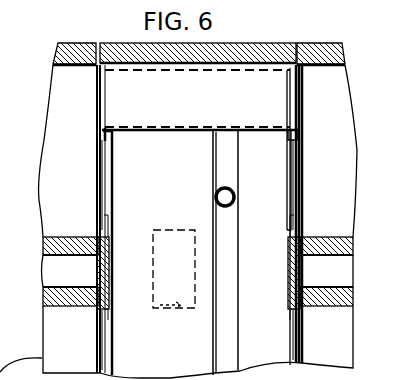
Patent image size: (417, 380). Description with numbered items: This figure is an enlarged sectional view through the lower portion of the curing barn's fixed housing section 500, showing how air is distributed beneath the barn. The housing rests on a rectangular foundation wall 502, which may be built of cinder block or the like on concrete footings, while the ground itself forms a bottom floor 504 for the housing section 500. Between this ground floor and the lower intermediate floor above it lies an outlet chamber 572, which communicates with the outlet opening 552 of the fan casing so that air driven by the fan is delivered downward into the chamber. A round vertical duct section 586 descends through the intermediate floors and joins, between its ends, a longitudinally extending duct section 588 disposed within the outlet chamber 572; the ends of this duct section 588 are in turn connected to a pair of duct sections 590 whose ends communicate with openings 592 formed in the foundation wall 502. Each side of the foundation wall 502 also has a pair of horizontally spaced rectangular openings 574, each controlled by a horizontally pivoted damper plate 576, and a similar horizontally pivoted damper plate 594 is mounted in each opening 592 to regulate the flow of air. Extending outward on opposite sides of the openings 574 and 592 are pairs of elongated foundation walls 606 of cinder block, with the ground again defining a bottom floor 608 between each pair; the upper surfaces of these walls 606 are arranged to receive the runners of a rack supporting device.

The fixed housing section 500 is at (303, 44).
The foundation wall 502 is at (192, 58).
The bottom floor 504 is at (183, 190).
The outlet opening 552 is at (177, 311).
The outlet chamber 572 is at (283, 198).
The rectangular openings 574 is at (100, 218).
The damper plate 576 is at (100, 158).
The round vertical duct section 586 is at (236, 201).
The longitudinally extending duct section 588 is at (224, 344).
The duct sections 590 is at (143, 119).
The openings 592 is at (300, 128).
The damper plate 594 is at (100, 108).
The elongated foundation walls 606 is at (71, 66).
The bottom floor 608 is at (44, 150).